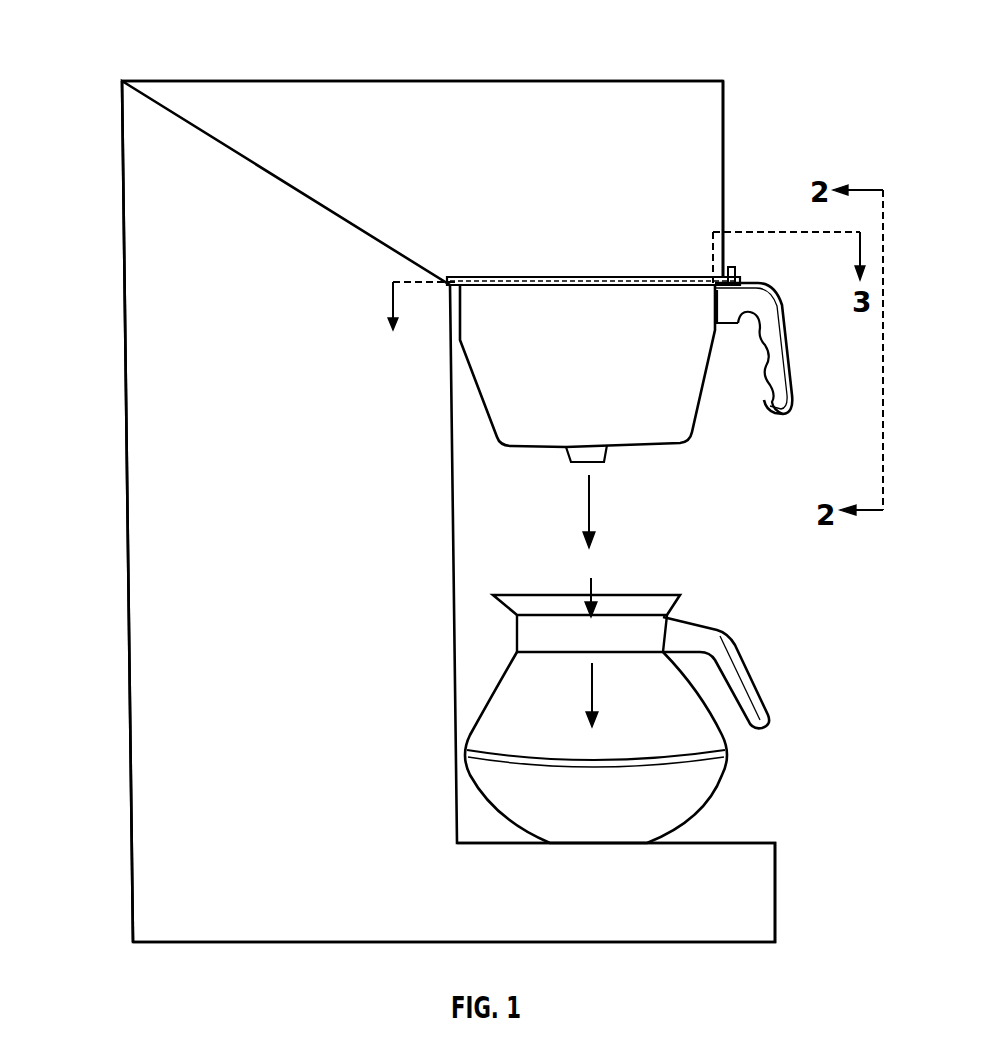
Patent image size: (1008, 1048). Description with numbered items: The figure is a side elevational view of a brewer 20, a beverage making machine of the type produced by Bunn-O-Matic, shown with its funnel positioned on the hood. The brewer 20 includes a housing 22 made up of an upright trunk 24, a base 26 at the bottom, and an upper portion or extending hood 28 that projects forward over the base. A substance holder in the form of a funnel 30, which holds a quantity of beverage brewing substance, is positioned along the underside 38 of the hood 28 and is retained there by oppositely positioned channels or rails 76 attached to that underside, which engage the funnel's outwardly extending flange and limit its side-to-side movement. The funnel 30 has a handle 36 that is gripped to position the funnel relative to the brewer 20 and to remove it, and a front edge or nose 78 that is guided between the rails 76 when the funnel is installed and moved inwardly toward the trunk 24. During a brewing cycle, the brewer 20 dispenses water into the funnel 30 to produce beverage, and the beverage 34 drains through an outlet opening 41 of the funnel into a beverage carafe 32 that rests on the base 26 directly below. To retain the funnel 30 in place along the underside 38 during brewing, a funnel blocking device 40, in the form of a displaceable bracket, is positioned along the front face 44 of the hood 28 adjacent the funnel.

The brewer 20 is at (132, 42).
The housing 22 is at (119, 179).
The trunk 24 is at (144, 541).
The base 26 is at (776, 890).
The hood 28 is at (440, 95).
The funnel 30 is at (698, 426).
The beverage carafe 32 is at (725, 756).
The beverage 34 is at (592, 505).
The handle 36 is at (776, 374).
The underside of the hood 38 is at (668, 285).
The funnel blocking device 40 is at (752, 276).
The outlet opening 41 is at (608, 455).
The front face 44 is at (725, 108).
The rails 76 is at (516, 285).
The nose 78 is at (462, 284).